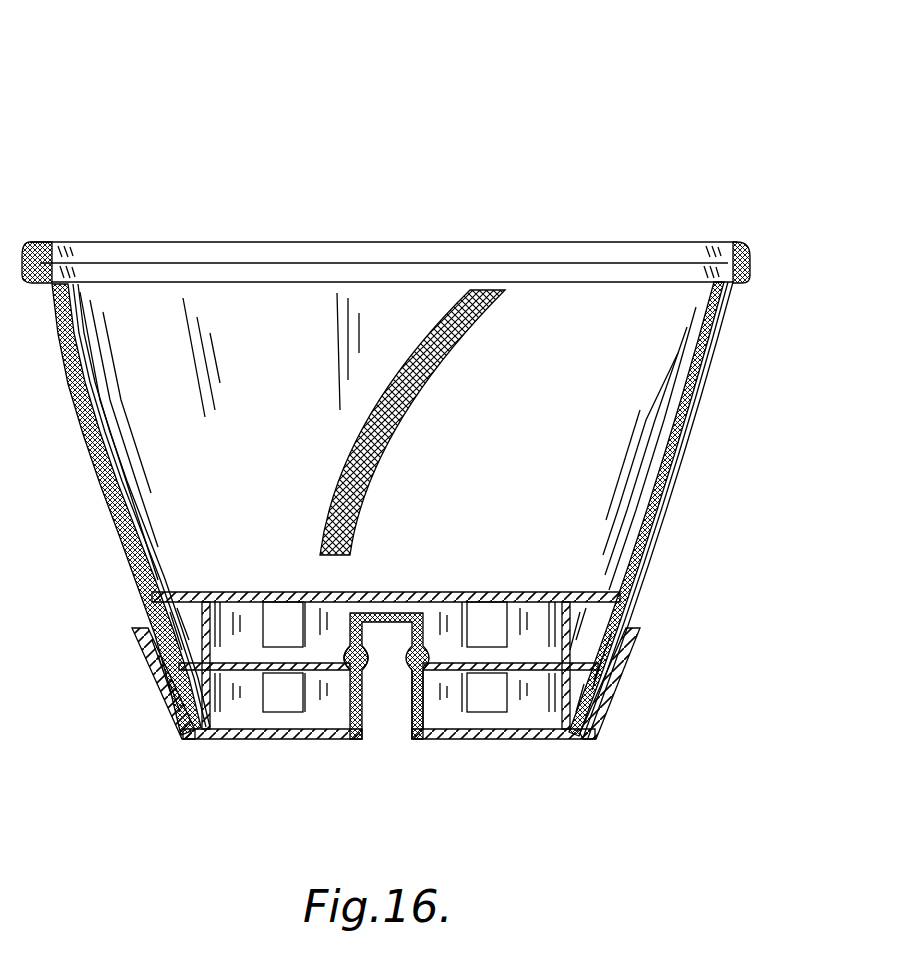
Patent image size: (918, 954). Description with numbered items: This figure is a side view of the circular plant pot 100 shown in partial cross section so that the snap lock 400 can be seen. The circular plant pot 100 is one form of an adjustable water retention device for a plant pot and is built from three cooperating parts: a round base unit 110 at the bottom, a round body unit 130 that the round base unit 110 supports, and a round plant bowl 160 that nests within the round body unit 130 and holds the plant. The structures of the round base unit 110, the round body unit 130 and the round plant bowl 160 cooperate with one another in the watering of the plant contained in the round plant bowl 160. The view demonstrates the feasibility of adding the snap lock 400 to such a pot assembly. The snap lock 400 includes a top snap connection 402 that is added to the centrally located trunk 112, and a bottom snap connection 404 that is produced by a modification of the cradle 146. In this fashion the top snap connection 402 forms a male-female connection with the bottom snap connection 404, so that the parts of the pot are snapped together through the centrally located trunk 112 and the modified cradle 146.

The circular plant pot 100 is at (141, 164).
The snap lock 400 is at (405, 444).
The round plant bowl 160 is at (271, 228).
The top snap connection 402 is at (700, 263).
The round body unit 130 is at (657, 605).
The round base unit 110 is at (642, 682).
The cradle 146 is at (424, 636).
The bottom snap connection 404 is at (407, 660).
The centrally located trunk 112 is at (423, 697).